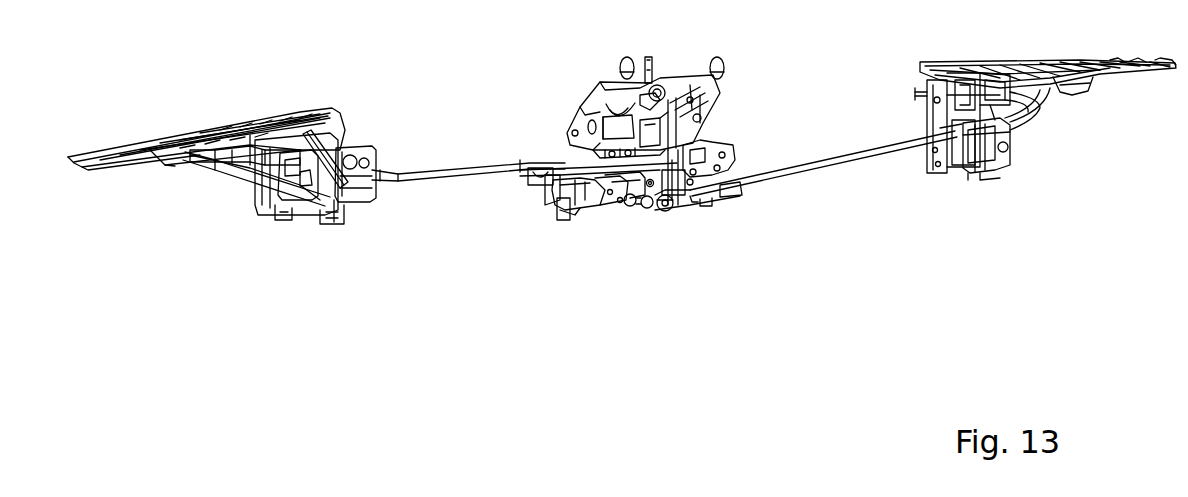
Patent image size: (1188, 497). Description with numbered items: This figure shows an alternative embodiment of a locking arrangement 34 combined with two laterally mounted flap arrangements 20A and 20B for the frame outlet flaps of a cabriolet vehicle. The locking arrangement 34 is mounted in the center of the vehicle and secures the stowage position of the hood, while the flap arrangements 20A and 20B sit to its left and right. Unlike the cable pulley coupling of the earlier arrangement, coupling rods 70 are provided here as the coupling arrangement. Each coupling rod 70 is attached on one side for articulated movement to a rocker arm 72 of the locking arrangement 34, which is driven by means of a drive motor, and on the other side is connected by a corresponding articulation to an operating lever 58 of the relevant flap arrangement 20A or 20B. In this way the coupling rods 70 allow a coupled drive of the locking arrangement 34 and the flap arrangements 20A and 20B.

The flap arrangement 20A is at (233, 173).
The flap arrangement 20B is at (985, 173).
The operating lever 58 is at (327, 150).
The coupling rods 70 is at (458, 172).
The rocker arm 72 is at (648, 187).
The locking arrangement 34 is at (675, 209).